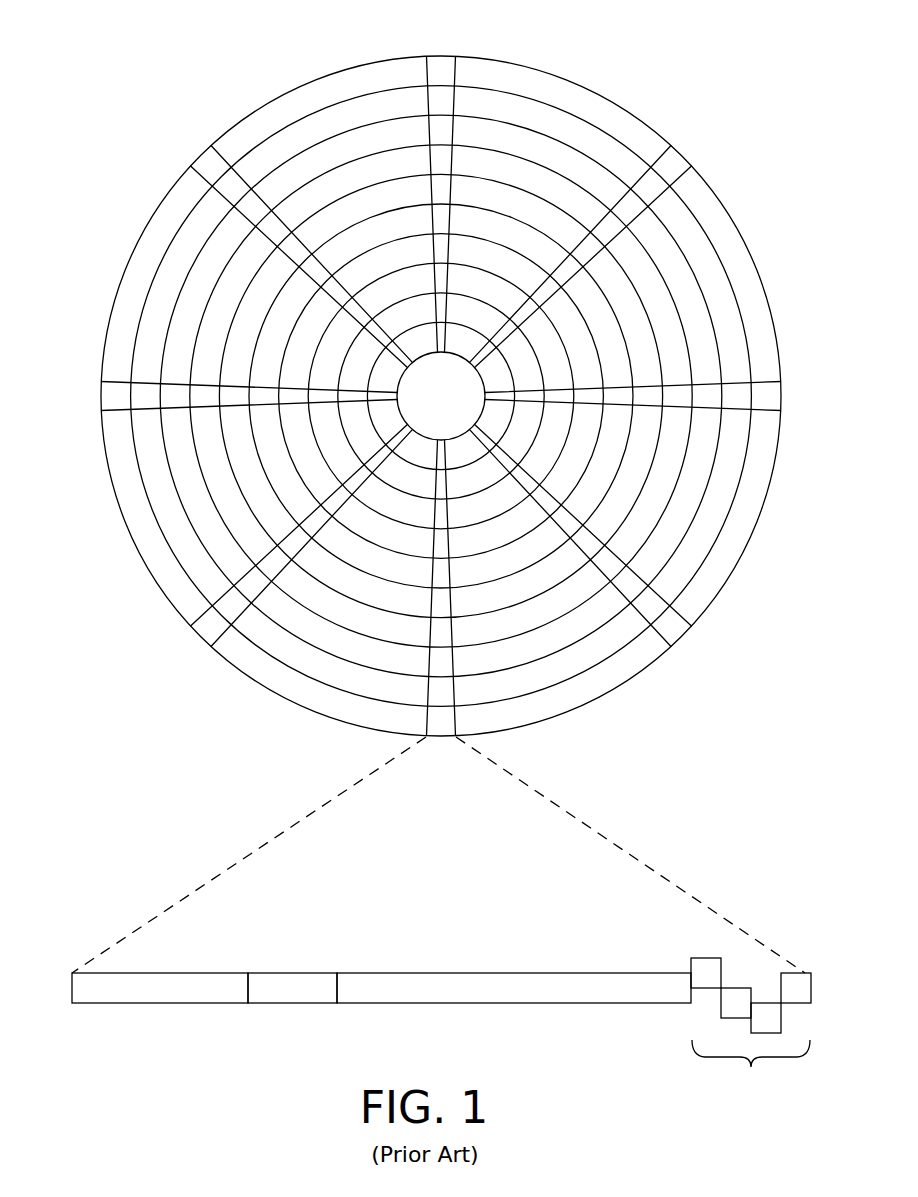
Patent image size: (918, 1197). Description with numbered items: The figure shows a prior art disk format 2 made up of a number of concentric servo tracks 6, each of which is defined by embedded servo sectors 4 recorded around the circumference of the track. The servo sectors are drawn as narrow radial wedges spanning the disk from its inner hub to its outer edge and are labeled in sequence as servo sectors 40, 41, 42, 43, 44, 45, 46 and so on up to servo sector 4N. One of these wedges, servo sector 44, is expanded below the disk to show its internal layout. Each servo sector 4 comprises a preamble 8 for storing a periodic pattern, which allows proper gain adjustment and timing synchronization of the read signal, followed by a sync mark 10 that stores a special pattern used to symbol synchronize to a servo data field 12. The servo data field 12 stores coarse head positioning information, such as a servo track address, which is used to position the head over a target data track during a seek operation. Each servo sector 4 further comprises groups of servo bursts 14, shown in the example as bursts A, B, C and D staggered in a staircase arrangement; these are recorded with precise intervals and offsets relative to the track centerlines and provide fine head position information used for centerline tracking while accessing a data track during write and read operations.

The disk format 2 is at (440, 410).
The servo sector 4 is at (440, 410).
The servo sector 40 is at (441, 68).
The servo sector 41 is at (672, 165).
The servo sector 42 is at (771, 397).
The servo sector 43 is at (677, 632).
The servo sector 44 is at (288, 812).
The servo sector 45 is at (205, 632).
The servo sector 46 is at (110, 397).
The servo sector 4N is at (272, 233).
The servo track 6 is at (580, 107).
The preamble 8 is at (138, 1004).
The sync mark 10 is at (288, 1004).
The servo data field 12 is at (502, 1004).
The servo bursts 14 is at (682, 942).